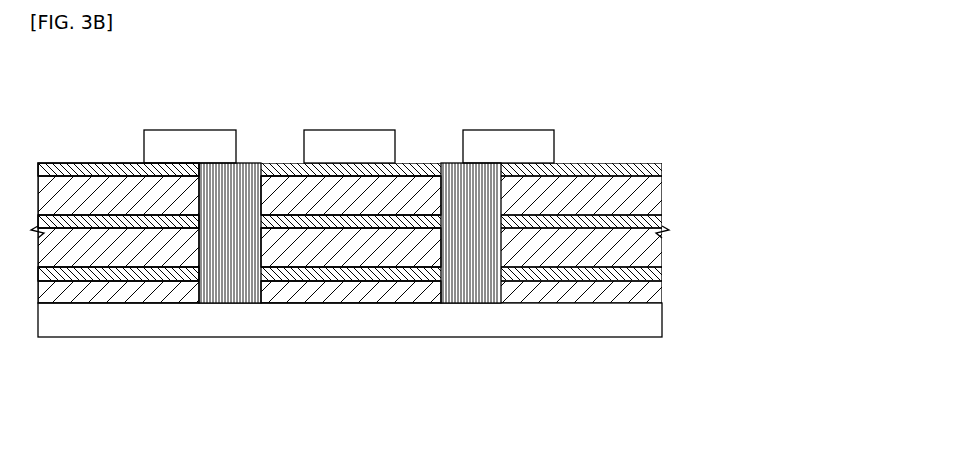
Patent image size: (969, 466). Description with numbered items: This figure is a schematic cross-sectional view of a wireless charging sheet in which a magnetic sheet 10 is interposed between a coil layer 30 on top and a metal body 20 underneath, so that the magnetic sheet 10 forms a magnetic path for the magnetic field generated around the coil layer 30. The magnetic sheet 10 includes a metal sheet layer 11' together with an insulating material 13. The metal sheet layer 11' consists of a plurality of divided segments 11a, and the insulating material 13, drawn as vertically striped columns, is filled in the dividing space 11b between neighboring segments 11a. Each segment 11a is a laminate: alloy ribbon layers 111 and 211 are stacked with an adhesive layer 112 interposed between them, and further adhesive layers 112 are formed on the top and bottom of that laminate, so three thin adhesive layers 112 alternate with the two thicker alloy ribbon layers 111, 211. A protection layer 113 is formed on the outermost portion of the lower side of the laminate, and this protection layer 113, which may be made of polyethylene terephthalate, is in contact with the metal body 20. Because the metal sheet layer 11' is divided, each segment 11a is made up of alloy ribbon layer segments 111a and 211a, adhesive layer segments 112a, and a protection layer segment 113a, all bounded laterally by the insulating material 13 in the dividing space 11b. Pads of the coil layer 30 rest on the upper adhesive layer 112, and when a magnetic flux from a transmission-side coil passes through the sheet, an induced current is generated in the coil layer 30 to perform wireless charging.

The magnetic sheet 10 is at (427, 245).
The metal sheet layer 11' is at (407, 232).
The segment 11a is at (435, 391).
The dividing space 11b is at (495, 288).
The insulating material 13 is at (504, 245).
The metal body 20 is at (672, 319).
The coil layer 30 is at (352, 130).
The alloy ribbon layer 111 is at (672, 196).
The alloy ribbon layer segment 111a is at (285, 200).
The adhesive layer 112 is at (672, 169).
The adhesive layer segment 112a is at (106, 170).
The protection layer 113 is at (389, 293).
The protection layer segment 113a is at (402, 290).
The alloy ribbon layer 211 is at (672, 248).
The alloy ribbon layer segment 211a is at (343, 253).